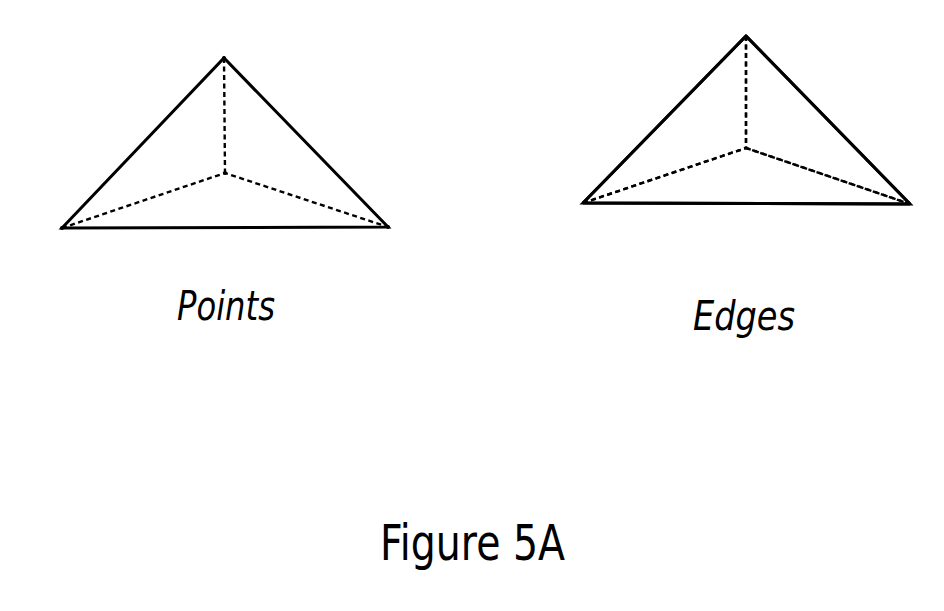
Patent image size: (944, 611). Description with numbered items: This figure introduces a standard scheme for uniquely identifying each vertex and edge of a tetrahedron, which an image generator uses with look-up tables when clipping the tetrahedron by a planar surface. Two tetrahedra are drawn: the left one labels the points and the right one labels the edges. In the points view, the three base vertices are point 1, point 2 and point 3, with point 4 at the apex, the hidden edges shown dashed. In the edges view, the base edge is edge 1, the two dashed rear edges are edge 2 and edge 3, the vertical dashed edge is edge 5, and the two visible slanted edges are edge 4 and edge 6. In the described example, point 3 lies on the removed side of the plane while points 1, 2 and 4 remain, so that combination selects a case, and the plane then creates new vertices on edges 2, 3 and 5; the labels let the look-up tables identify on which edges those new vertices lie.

The point 1 is at (470, 229).
The point / edge 2 is at (648, 199).
The point / edge 3 is at (484, 173).
The point / edge 4 is at (563, 114).
The edge 5 is at (754, 92).
The edge 6 is at (664, 119).